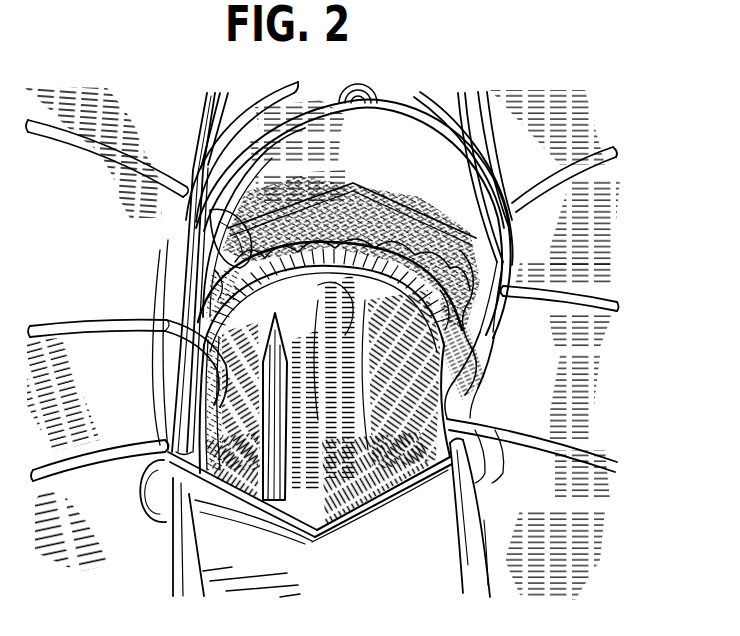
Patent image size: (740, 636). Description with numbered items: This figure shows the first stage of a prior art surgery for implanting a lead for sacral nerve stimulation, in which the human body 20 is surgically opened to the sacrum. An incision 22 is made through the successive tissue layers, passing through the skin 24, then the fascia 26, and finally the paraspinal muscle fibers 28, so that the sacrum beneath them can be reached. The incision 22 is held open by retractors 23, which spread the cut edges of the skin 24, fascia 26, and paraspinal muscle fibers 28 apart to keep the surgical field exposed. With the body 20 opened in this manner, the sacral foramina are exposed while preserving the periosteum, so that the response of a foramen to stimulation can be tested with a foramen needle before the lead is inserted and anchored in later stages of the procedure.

The human body 20 is at (563, 358).
The incision 22 is at (458, 382).
The retractors 23 is at (505, 272).
The skin 24 is at (553, 503).
The fascia 26 is at (393, 218).
The paraspinal muscle fibers 28 is at (253, 367).